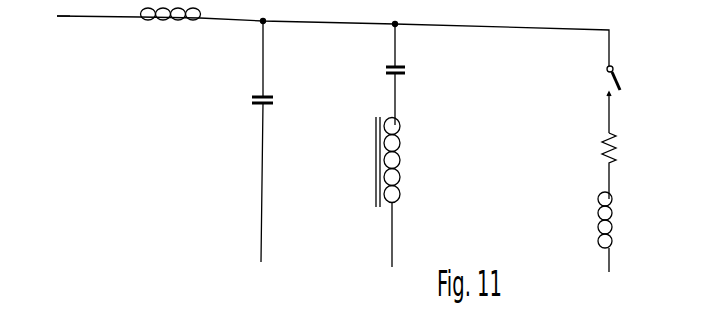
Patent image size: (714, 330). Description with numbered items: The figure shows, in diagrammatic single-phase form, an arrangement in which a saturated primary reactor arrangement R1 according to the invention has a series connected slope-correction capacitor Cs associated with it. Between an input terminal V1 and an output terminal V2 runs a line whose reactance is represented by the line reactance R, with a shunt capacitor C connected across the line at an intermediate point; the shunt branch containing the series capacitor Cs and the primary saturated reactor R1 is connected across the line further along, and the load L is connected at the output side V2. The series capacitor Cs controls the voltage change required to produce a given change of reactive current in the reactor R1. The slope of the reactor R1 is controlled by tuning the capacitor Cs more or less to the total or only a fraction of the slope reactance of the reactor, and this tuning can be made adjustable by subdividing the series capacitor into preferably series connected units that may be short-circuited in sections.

The input voltage terminal V1 is at (64, 34).
The line reactance R is at (170, 31).
The shunt capacitor C is at (271, 141).
The series connected slope-correction capacitor Cs is at (432, 71).
The primary saturated reactor arrangement R1 is at (428, 192).
The output voltage terminal with switch V2 is at (626, 80).
The load L is at (619, 202).